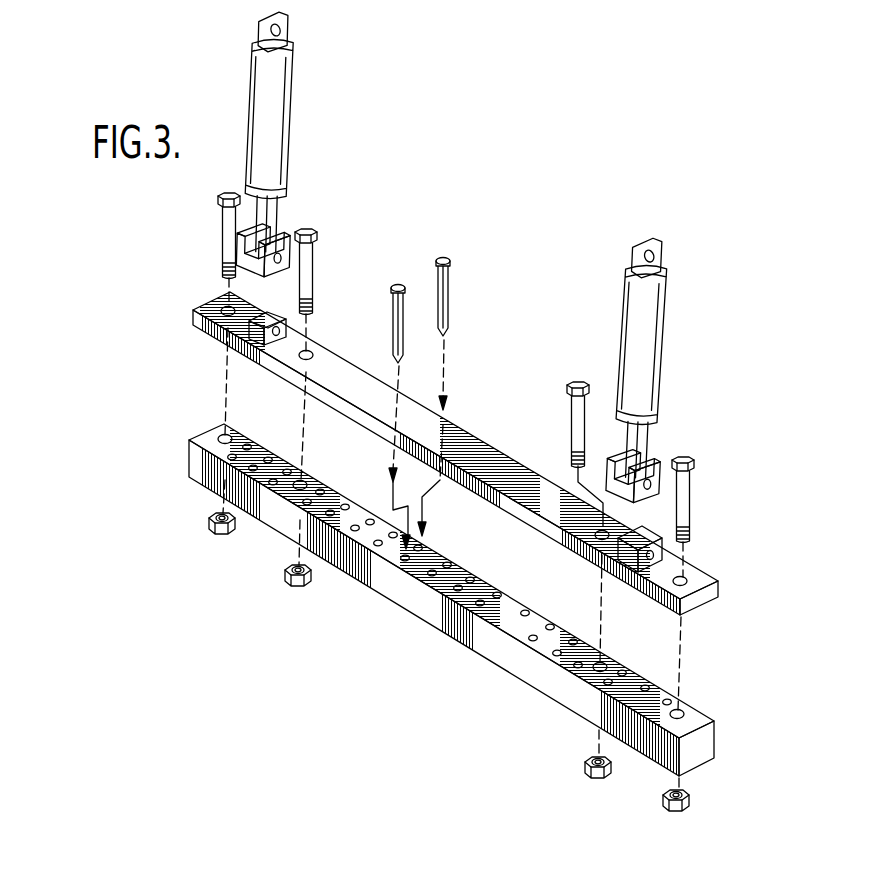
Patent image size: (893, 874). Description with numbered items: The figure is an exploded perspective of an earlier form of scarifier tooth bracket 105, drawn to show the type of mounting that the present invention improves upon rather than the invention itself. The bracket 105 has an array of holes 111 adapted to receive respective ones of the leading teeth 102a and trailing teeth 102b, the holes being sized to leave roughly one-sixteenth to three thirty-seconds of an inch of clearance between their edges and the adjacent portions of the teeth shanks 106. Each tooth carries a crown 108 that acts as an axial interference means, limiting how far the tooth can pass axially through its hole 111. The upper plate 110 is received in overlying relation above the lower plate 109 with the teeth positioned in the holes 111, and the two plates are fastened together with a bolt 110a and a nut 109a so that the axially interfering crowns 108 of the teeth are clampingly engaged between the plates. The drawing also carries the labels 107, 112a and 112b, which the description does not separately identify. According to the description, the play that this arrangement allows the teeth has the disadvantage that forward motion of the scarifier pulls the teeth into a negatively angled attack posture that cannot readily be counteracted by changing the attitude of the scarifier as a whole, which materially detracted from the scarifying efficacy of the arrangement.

The bracket 105 is at (183, 378).
The teeth shanks 106 is at (480, 272).
The pins 107 is at (418, 243).
The crown 108 is at (443, 258).
The plate 109 is at (493, 650).
The nut 109a is at (690, 800).
The plate 110 is at (708, 583).
The bolt 110a is at (692, 505).
The holes 111 is at (525, 611).
The cylinder 112a is at (667, 315).
The cylinder 112b is at (270, 105).
The leading teeth 102a is at (448, 305).
The trailing teeth 102b is at (392, 318).